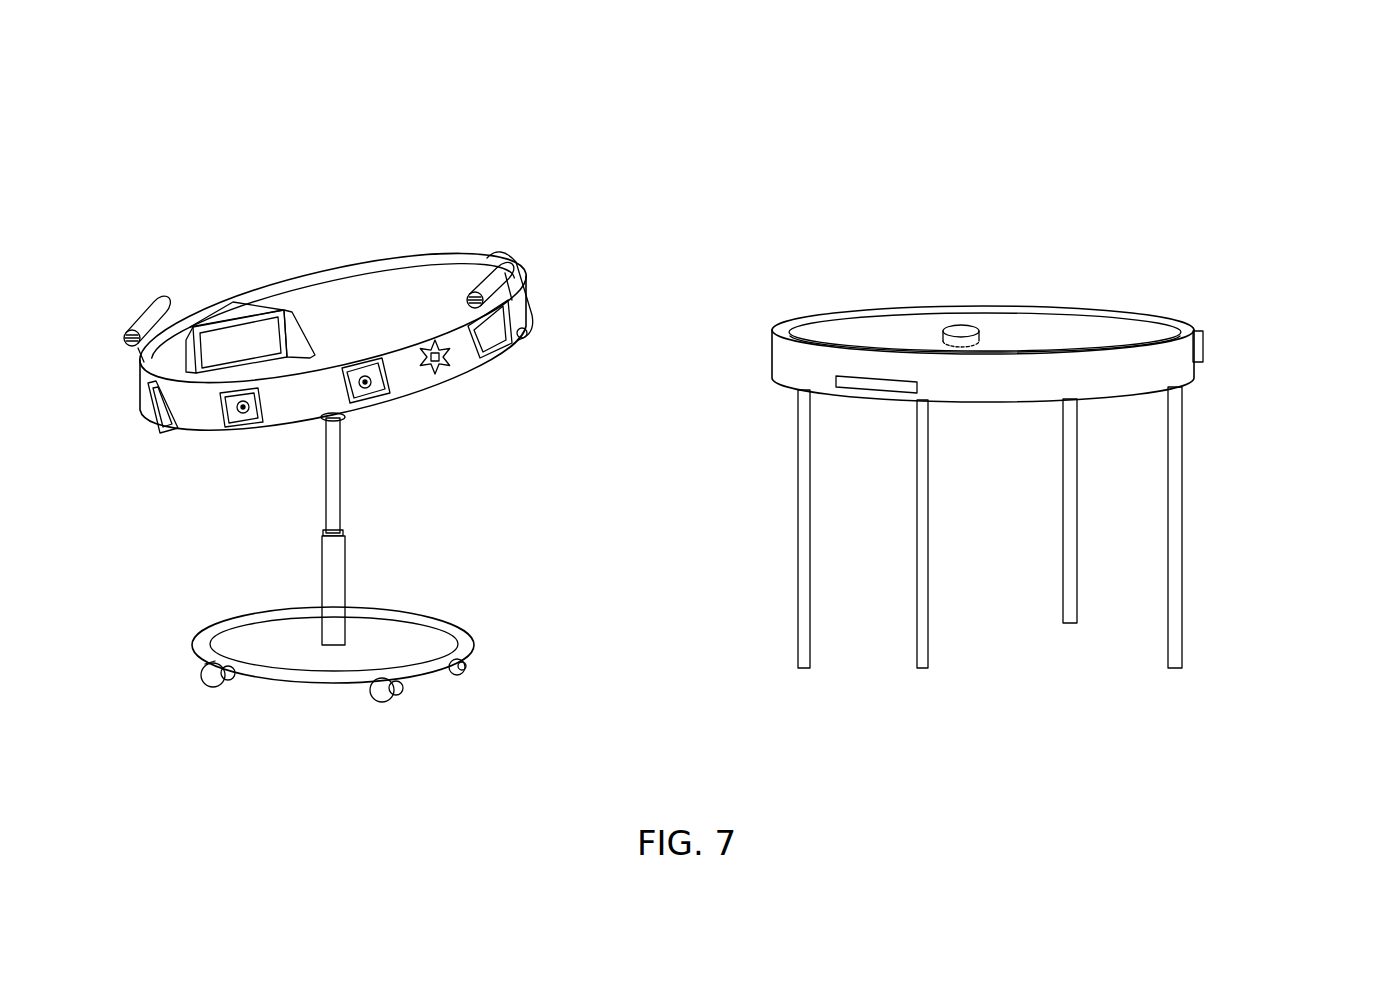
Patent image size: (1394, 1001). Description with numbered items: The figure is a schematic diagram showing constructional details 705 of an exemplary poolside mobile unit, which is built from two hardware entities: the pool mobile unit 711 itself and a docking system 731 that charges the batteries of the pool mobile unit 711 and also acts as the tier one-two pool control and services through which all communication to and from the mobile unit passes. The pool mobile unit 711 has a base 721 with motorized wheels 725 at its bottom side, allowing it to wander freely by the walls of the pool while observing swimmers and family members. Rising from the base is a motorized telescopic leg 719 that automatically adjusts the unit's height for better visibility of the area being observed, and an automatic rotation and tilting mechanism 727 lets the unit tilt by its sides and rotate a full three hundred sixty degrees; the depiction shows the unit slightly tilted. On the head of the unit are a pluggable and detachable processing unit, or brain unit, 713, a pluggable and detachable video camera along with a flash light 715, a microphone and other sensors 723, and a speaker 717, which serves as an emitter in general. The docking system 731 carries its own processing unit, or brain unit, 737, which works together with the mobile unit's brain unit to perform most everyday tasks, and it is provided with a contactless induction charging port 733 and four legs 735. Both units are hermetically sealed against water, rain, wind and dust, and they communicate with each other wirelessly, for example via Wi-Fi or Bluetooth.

The constructional details 705 is at (1263, 54).
The pool mobile unit 711 is at (523, 322).
The processing unit (brain unit) 713 is at (257, 347).
The video camera along with a flash light 715 is at (242, 418).
The speaker 717 is at (450, 357).
The motorized telescopic leg 719 is at (333, 565).
The base 721 is at (428, 652).
The microphone and other sensors 723 is at (370, 387).
The motorized wheels 725 is at (408, 683).
The automatic rotation and tilting mechanism 727 is at (327, 421).
The docking system (tier 1-2 pool control and services) 731 is at (1112, 330).
The contactless induction charging port 733 is at (882, 390).
The legs 735 is at (1070, 432).
The processing unit (brain unit) 737 is at (960, 333).